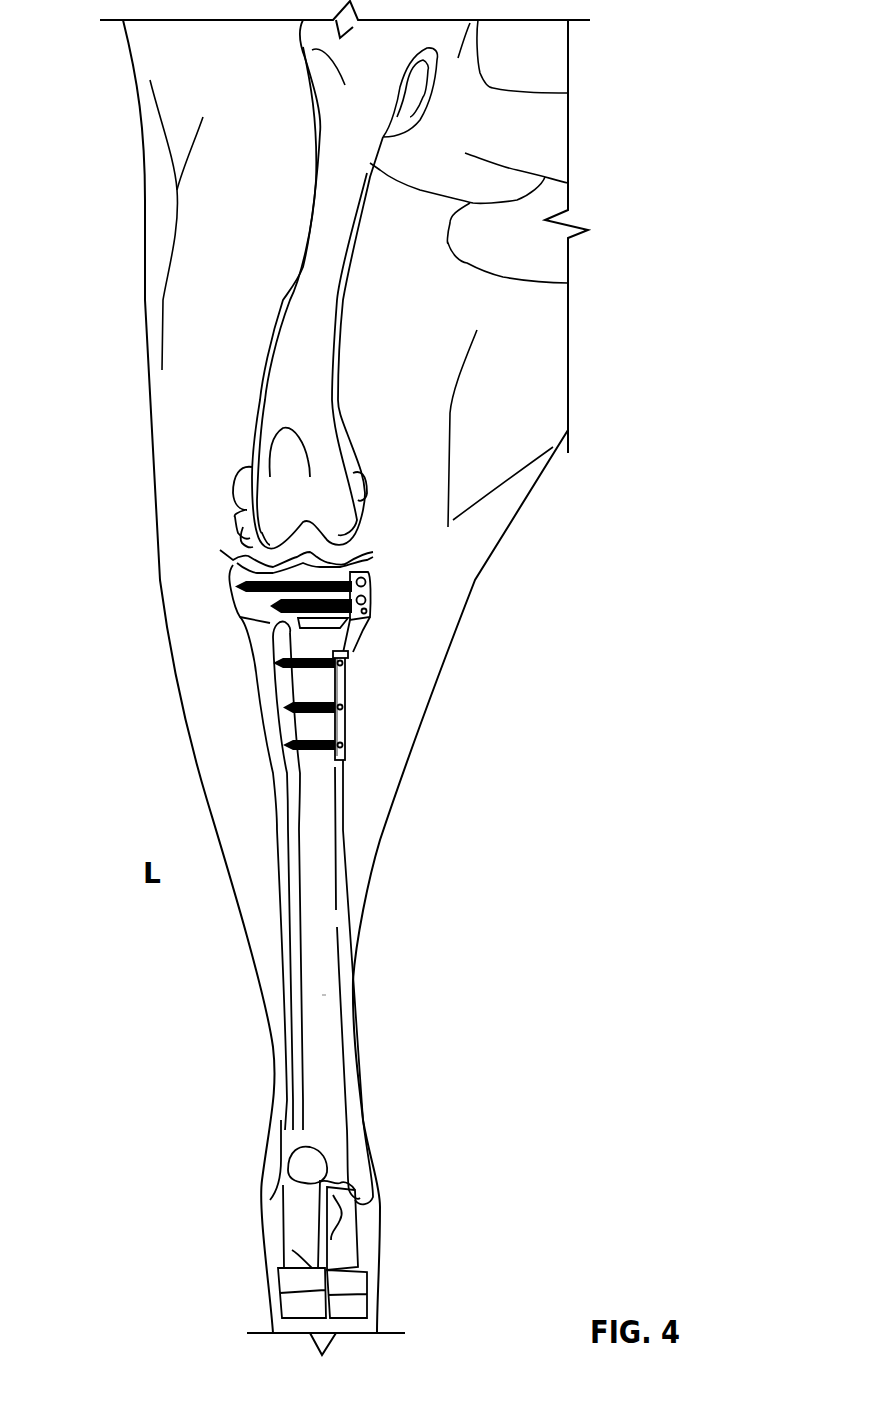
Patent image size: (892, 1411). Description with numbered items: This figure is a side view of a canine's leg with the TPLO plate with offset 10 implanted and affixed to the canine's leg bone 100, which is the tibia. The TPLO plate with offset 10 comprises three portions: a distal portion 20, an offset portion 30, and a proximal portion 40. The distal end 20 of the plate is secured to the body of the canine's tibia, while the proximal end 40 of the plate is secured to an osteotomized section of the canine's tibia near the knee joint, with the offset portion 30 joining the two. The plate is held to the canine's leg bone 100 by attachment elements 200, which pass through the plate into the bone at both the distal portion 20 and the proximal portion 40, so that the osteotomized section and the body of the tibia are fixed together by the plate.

The TPLO plate with offset 10 is at (356, 685).
The distal portion 20 is at (286, 703).
The offset portion 30 is at (361, 655).
The proximal portion 40 is at (271, 606).
The canine's leg bone 100 is at (322, 995).
The attachment elements 200 is at (236, 582).